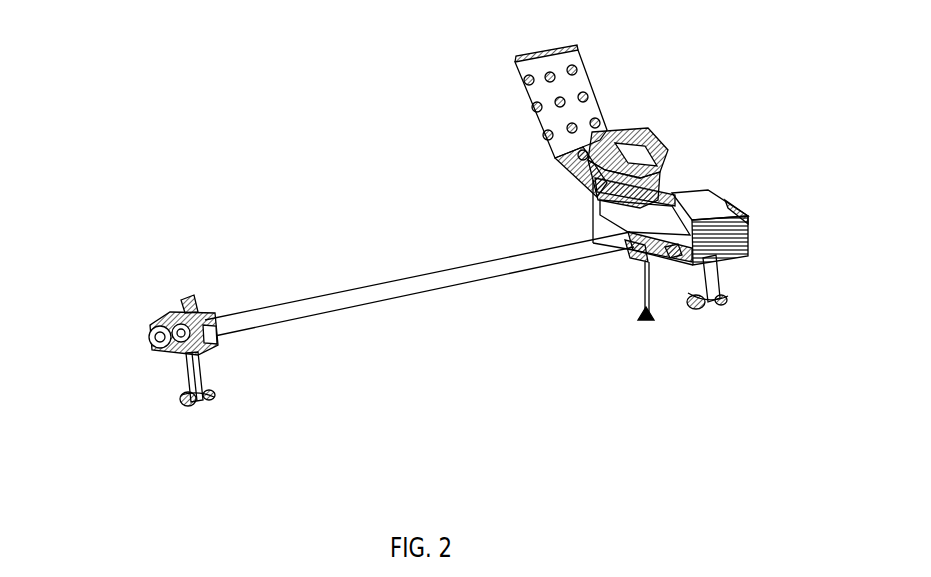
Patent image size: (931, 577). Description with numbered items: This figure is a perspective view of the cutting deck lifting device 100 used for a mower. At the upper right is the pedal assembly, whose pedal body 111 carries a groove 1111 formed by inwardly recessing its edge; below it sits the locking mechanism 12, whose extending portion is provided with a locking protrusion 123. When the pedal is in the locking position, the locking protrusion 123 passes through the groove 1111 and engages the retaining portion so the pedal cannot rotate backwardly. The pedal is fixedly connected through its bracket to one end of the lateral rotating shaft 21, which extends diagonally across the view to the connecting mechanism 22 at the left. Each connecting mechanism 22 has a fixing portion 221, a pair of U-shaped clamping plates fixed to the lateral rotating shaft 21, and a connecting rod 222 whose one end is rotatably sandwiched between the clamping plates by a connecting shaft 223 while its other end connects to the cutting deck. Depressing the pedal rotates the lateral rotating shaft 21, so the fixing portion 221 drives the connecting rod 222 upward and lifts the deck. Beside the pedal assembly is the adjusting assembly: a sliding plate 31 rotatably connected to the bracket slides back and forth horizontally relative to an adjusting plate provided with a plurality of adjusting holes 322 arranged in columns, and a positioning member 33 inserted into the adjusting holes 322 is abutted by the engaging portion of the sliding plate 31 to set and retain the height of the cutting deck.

The cutting deck lifting device 100 is at (86, 49).
The pedal body 111 is at (516, 86).
The groove 1111 is at (605, 130).
The locking protrusion 123 is at (562, 129).
The sliding plate 31 is at (660, 165).
The adjusting holes 322 is at (722, 216).
The locking mechanism 12 is at (604, 216).
The positioning member 33 is at (626, 240).
The lateral rotating shaft 21 is at (351, 303).
The connecting mechanism 22 is at (165, 300).
The fixing portion 221 is at (187, 303).
The connecting shaft 223 is at (184, 358).
The connecting rod 222 is at (193, 415).